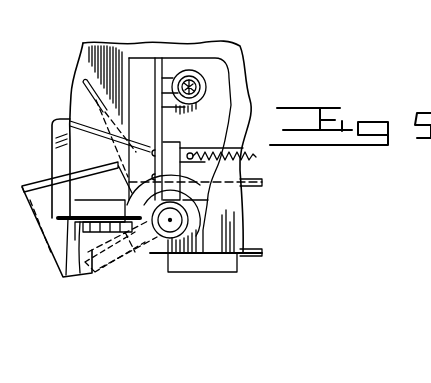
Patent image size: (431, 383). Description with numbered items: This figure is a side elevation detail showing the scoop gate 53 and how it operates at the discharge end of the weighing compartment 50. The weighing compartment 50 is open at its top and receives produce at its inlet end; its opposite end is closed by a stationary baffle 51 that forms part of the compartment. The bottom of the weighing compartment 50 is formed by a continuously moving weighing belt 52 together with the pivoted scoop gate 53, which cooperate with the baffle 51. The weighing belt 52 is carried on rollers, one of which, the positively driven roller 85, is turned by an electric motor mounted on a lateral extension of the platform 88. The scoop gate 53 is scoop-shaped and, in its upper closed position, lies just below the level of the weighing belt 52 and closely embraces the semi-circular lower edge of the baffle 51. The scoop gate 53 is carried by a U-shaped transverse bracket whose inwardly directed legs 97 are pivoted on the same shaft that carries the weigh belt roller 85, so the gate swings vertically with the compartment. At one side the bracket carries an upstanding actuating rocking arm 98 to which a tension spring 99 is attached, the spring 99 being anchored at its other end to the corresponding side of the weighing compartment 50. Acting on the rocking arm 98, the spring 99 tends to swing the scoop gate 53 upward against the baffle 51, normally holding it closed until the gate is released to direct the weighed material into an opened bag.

The weighing compartment 50 is at (70, 58).
The baffle 51 is at (159, 60).
The weighing belt 52 is at (248, 253).
The scoop gate 53 is at (50, 143).
The roller 85 is at (160, 262).
The platform 88 is at (243, 66).
The legs 97 is at (100, 252).
The actuating rocking arm 98 is at (168, 143).
The tension spring 99 is at (256, 158).